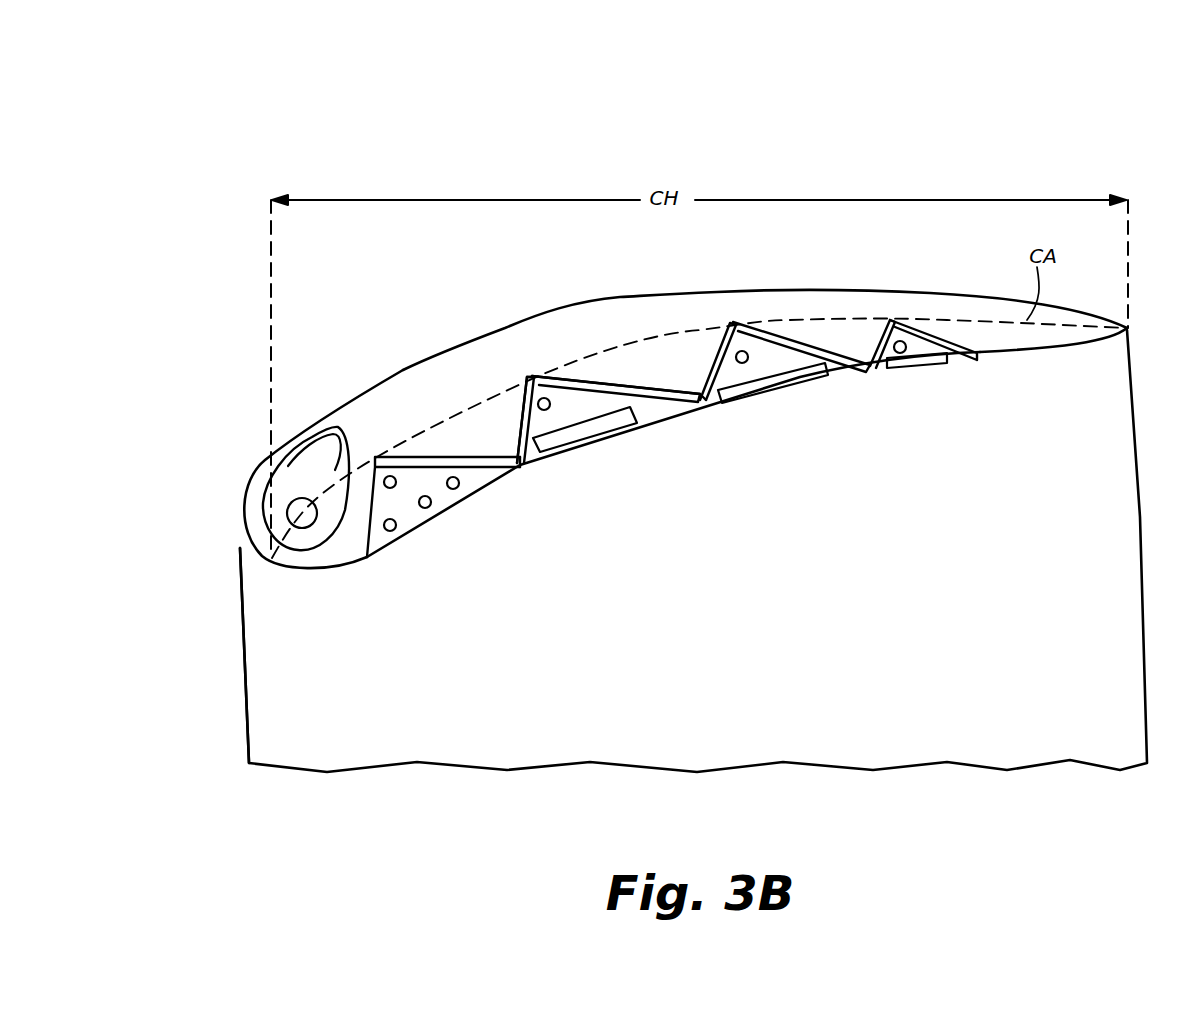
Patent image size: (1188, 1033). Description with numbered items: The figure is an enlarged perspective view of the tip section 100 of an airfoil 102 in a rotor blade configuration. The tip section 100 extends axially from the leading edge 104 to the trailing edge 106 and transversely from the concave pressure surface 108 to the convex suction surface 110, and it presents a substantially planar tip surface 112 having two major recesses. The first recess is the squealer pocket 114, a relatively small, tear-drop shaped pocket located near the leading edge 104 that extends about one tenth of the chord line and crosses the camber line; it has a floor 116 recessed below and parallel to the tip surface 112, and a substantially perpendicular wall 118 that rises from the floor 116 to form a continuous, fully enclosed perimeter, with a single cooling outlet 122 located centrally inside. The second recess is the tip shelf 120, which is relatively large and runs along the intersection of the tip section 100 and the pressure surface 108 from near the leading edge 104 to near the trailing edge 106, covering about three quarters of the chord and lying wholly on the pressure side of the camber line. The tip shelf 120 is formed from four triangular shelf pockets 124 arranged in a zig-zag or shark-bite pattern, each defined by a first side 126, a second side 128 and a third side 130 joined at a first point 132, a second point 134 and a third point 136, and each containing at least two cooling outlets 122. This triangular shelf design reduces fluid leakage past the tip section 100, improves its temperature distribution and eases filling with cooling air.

The tip section 100 is at (226, 320).
The airfoil 102 is at (1110, 137).
The leading edge 104 is at (248, 596).
The trailing edge 106 is at (1133, 393).
The pressure surface 108 is at (733, 612).
The suction surface 110 is at (622, 282).
The tip surface 112 is at (463, 352).
The squealer pocket 114 is at (333, 430).
The floor 116 is at (333, 467).
The wall 118 is at (328, 428).
The tip shelf 120 is at (371, 576).
The cooling outlets 122 is at (305, 498).
The shelf pockets 124 is at (418, 457).
The first side 126 is at (667, 420).
The second side 128 is at (517, 415).
The third side 130 is at (590, 388).
The first point 132 is at (518, 463).
The second point 134 is at (532, 377).
The third point 136 is at (705, 405).